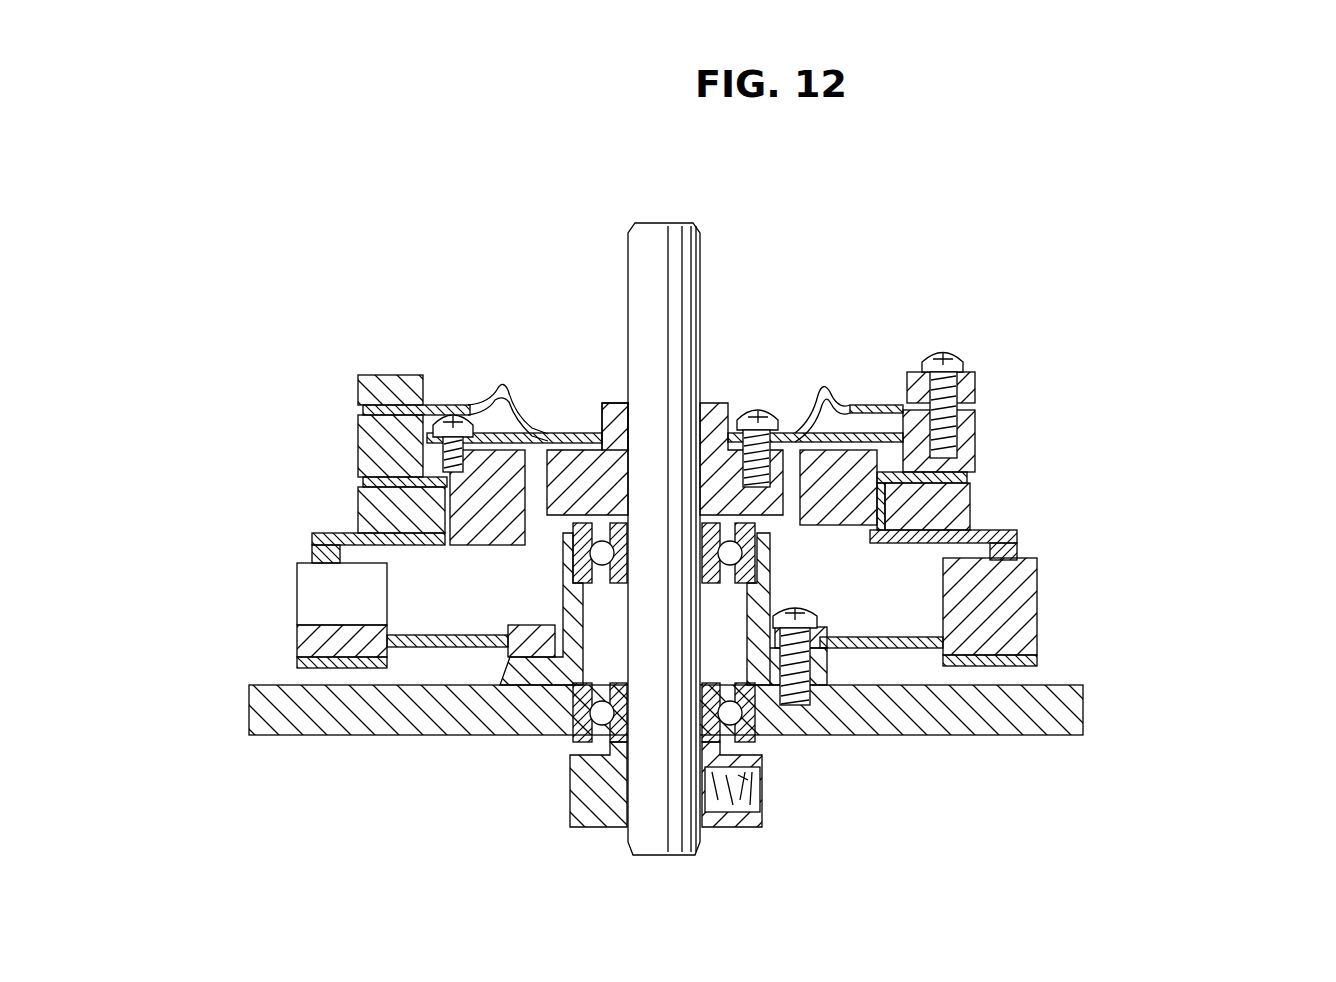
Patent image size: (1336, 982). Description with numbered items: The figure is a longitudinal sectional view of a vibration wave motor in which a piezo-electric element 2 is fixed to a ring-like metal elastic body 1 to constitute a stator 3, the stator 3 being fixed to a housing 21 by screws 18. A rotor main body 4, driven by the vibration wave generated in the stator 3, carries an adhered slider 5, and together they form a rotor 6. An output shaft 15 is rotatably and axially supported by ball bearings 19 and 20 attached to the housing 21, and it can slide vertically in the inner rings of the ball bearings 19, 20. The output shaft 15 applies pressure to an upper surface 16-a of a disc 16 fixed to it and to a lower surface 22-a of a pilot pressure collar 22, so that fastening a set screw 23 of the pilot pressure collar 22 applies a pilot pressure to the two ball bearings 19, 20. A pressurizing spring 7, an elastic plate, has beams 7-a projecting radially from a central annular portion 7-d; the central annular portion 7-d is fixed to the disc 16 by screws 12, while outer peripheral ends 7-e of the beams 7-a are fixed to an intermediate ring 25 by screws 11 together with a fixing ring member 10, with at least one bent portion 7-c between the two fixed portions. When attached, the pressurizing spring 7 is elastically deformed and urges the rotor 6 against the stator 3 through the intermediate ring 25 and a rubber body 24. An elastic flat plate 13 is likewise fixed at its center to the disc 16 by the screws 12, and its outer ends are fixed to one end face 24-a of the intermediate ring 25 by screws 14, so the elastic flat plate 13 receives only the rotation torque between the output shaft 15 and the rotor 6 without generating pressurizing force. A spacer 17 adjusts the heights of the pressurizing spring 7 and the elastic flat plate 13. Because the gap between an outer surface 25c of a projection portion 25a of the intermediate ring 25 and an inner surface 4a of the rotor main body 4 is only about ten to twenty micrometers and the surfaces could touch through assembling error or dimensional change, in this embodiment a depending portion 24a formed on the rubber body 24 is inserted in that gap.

The ring-like metal elastic body 1 is at (1010, 600).
The piezo-electric element 2 is at (1037, 660).
The stator 3 is at (787, 613).
The rotor main body 4 is at (712, 443).
The inner surface 4a is at (358, 517).
The slider 5 is at (1033, 553).
The rotor 6 is at (735, 450).
The pressurizing spring 7 is at (750, 304).
The beams 7-a is at (838, 412).
The bent portion 7-c is at (795, 430).
The central annular portion 7-d is at (735, 430).
The outer peripheral ends 7-e is at (887, 400).
The fixing ring member 10 is at (980, 380).
The screws 11 is at (965, 360).
The screws 12 is at (775, 410).
The elastic flat plate 13 is at (500, 408).
The screws 14 is at (442, 415).
The output shaft 15 is at (703, 243).
The disc 16 is at (661, 370).
The upper surface 16-a is at (618, 405).
The spacer 17 is at (565, 432).
The screws 18 is at (810, 610).
The ball bearing 19 is at (497, 660).
The ball bearing 20 is at (573, 738).
The housing 21 is at (1060, 725).
The pilot pressure collar 22 is at (784, 821).
The lower surface 22-a is at (583, 827).
The set screw 23 is at (733, 790).
The rubber body 24 is at (357, 485).
The depending portion 24a is at (360, 497).
The end face 24-a is at (385, 455).
The intermediate ring 25 is at (760, 484).
The projection portion 25a is at (498, 532).
The outer surface 25c is at (462, 540).